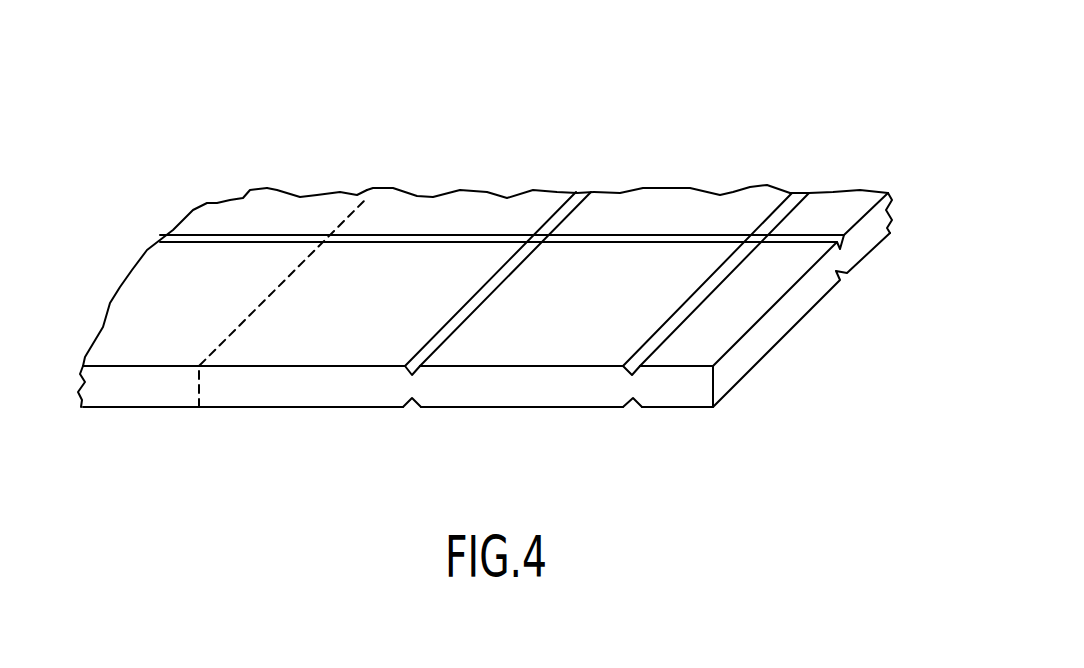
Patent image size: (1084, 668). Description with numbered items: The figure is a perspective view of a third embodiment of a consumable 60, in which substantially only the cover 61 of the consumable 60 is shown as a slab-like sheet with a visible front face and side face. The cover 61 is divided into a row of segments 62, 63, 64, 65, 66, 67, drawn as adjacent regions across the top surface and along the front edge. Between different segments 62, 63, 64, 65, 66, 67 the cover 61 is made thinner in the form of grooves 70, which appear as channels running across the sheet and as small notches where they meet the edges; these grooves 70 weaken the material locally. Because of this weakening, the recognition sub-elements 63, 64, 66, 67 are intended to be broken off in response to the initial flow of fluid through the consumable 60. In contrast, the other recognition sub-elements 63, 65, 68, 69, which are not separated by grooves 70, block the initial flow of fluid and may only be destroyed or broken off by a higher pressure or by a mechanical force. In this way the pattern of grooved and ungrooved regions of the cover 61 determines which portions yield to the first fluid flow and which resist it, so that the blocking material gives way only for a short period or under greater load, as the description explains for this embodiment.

The consumable 60 is at (864, 99).
The cover 61 is at (737, 358).
The segment 62 is at (322, 352).
The recognition sub-element 63 is at (538, 352).
The recognition sub-element 64 is at (680, 352).
The recognition sub-element 65 is at (455, 202).
The recognition sub-element 66 is at (673, 202).
The recognition sub-element 67 is at (838, 205).
The recognition sub-element 68 is at (143, 352).
The recognition sub-element 69 is at (273, 200).
The grooves 70 is at (420, 246).